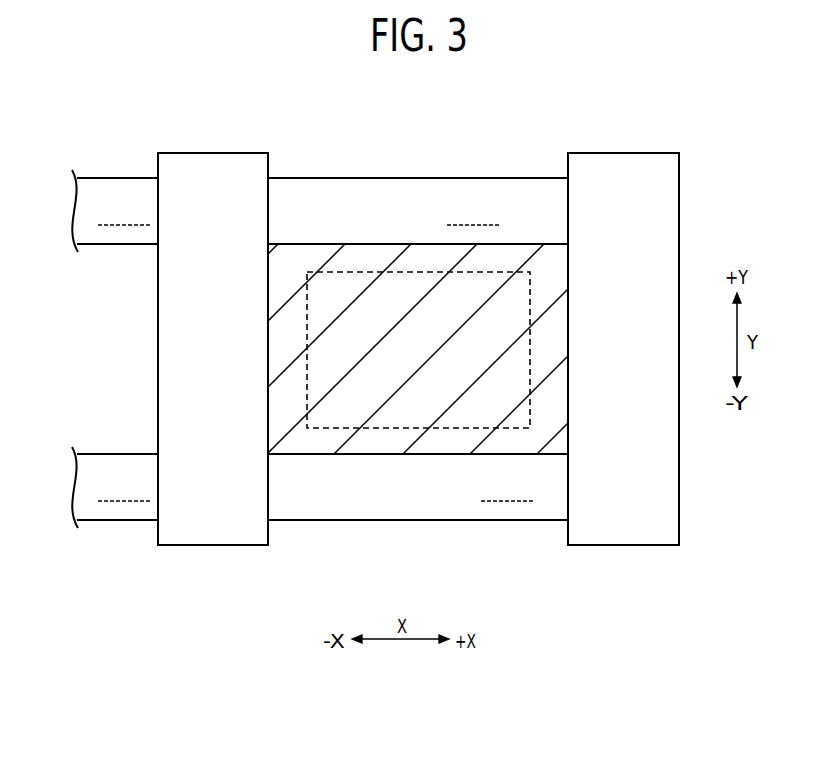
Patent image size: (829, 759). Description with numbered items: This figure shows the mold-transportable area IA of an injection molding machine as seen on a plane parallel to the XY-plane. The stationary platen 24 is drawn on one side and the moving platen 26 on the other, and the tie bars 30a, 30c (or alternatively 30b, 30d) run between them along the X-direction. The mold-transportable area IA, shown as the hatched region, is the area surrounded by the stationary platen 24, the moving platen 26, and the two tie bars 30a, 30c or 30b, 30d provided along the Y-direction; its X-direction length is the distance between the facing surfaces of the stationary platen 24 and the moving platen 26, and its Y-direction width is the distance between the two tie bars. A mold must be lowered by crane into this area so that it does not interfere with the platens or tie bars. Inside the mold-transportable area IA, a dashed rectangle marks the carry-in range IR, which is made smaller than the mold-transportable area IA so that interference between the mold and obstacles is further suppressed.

The stationary platen 24 is at (596, 153).
The moving platen 26 is at (213, 153).
The tie bar 30a is at (322, 513).
The tie bar 30b is at (433, 503).
The tie bar 30c is at (322, 182).
The tie bar 30d is at (435, 190).
The mold-transportable area IA is at (373, 442).
The carry-in range IR is at (367, 272).